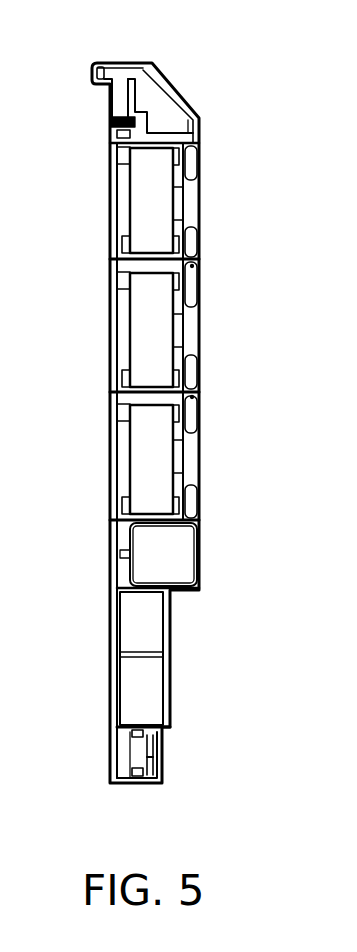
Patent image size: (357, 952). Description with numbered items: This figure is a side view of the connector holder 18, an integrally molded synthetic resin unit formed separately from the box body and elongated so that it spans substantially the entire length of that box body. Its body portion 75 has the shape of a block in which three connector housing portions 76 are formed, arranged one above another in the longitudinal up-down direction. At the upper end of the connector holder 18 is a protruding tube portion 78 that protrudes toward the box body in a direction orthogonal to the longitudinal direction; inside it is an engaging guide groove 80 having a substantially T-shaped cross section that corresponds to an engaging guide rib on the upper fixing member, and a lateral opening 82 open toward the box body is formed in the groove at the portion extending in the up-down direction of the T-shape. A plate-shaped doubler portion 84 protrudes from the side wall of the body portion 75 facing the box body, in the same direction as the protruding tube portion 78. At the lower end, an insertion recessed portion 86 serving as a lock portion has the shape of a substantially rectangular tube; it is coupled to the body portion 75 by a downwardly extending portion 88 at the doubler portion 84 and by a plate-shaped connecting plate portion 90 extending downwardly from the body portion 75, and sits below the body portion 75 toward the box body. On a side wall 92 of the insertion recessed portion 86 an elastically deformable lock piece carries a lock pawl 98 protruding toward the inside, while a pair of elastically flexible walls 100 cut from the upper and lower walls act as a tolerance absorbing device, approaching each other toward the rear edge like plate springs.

The connector holder 18 is at (252, 40).
The body portion 75 is at (206, 154).
The connector housing portions 76 is at (178, 222).
The protruding tube portion 78 is at (98, 70).
The engaging guide groove 80 is at (110, 96).
The lateral opening 82 is at (110, 106).
The doubler portion 84 is at (112, 356).
The insertion recessed portion 86 is at (132, 753).
The downwardly extending portion 88 is at (113, 637).
The connecting plate portion 90 is at (168, 668).
The side wall 92 is at (157, 750).
The lock pawl 98 is at (149, 757).
The elastically flexible walls 100 is at (140, 735).